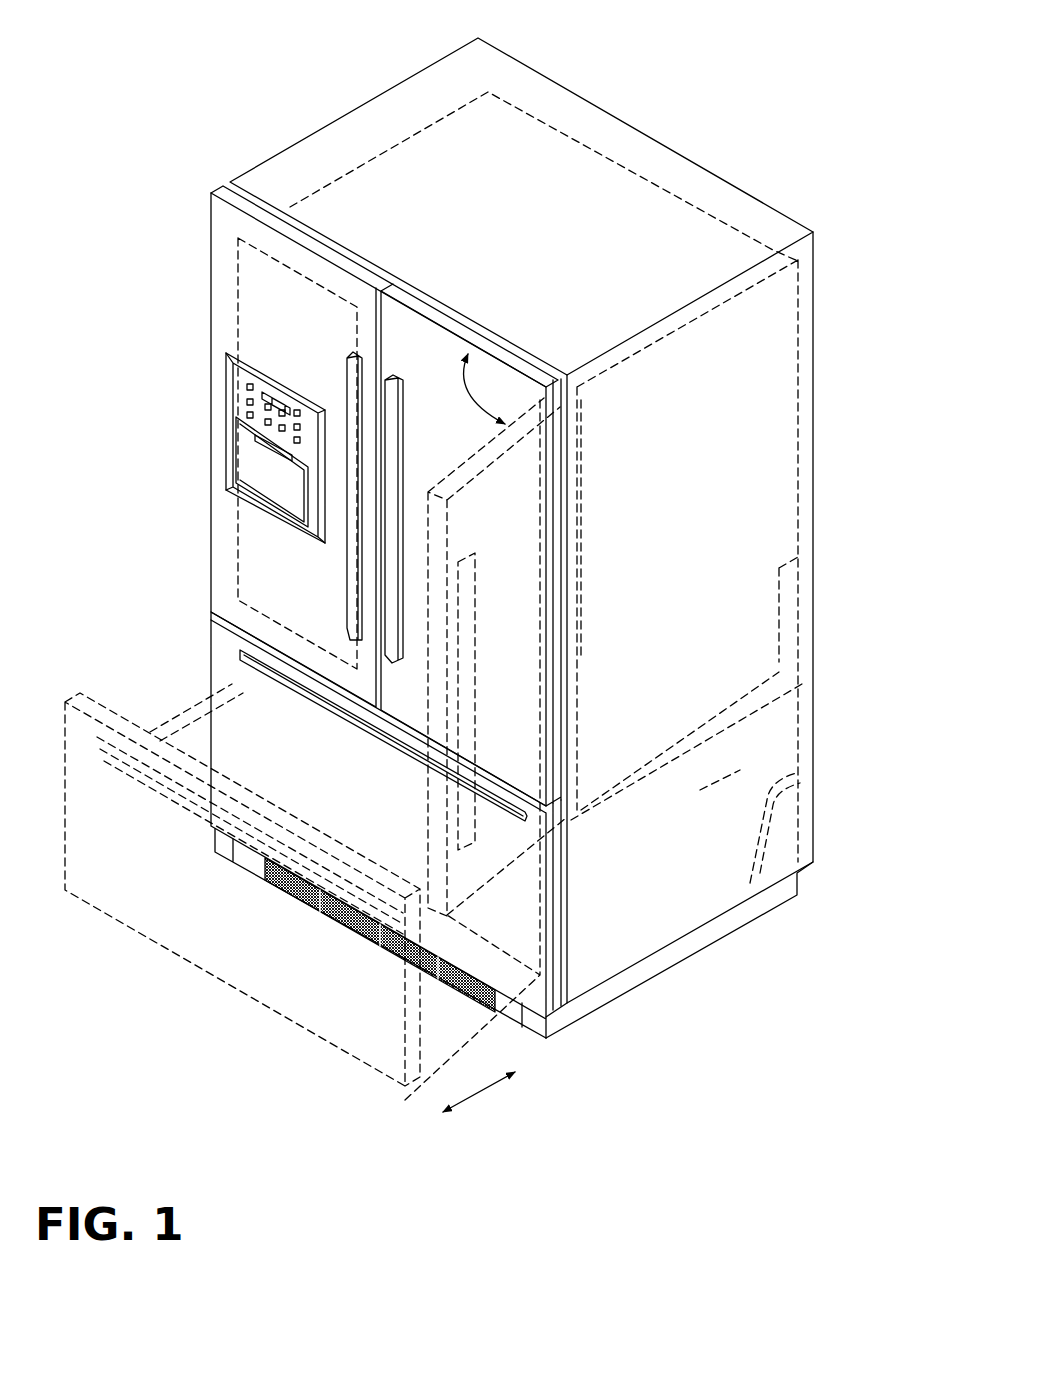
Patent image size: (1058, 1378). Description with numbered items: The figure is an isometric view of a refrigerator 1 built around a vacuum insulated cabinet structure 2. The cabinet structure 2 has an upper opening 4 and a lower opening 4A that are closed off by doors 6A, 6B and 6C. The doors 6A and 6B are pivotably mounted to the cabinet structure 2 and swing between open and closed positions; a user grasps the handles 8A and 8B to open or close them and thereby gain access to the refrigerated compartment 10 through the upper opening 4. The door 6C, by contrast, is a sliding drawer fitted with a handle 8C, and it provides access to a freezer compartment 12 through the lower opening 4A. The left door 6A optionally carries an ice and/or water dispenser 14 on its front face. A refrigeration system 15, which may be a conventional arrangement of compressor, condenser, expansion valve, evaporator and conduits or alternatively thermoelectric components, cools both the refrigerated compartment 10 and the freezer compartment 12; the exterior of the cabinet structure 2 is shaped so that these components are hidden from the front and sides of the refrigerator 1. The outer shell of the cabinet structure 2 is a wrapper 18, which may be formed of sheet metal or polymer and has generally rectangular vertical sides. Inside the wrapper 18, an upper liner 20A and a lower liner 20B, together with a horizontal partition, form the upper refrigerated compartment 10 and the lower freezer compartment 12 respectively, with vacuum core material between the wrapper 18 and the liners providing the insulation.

The refrigerator 1 is at (481, 564).
The vacuum insulated cabinet structure 2 is at (487, 575).
The upper opening 4 is at (273, 205).
The opening 4A is at (228, 632).
The door 6A is at (237, 450).
The door 6B is at (352, 558).
The door 6C is at (307, 808).
The handle 8A is at (357, 567).
The handle 8B is at (397, 600).
The handle 8C is at (368, 735).
The refrigerated compartment 10 is at (735, 415).
The freezer compartment 12 is at (730, 807).
The ice and/or water dispenser 14 is at (233, 437).
The refrigeration system 15 is at (783, 835).
The wrapper 18 is at (727, 183).
The upper liner 20A is at (800, 335).
The lower liner 20B is at (819, 731).